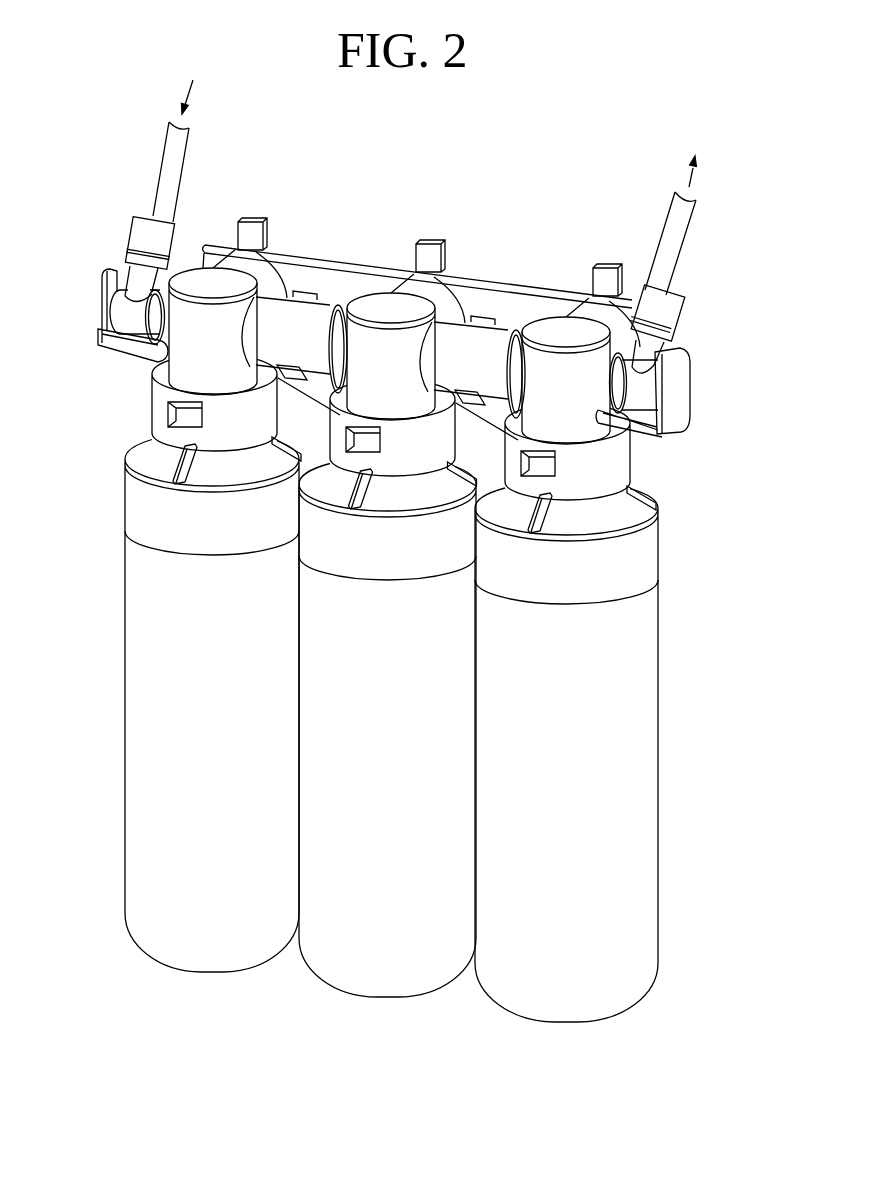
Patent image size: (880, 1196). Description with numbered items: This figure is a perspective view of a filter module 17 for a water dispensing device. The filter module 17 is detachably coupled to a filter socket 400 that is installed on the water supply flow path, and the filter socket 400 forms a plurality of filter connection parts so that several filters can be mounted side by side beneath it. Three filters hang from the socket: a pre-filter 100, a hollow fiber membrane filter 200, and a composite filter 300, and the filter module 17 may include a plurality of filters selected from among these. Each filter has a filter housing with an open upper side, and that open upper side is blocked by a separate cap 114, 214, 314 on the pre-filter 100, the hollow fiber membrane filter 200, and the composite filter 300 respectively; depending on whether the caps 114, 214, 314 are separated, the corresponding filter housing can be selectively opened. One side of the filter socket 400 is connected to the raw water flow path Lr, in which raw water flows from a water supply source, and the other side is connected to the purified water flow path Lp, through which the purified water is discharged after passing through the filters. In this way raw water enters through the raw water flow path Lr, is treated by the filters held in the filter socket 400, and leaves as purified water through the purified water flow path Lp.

The filter module 17 is at (716, 458).
The pre-filter 100 is at (133, 563).
The cap 114 is at (133, 507).
The hollow fiber membrane filter 200 is at (330, 740).
The cap 214 is at (327, 542).
The composite filter 300 is at (630, 690).
The cap 314 is at (643, 557).
The filter socket 400 is at (211, 280).
The raw water flow path Lr is at (168, 160).
The purified water flow path Lp is at (682, 220).